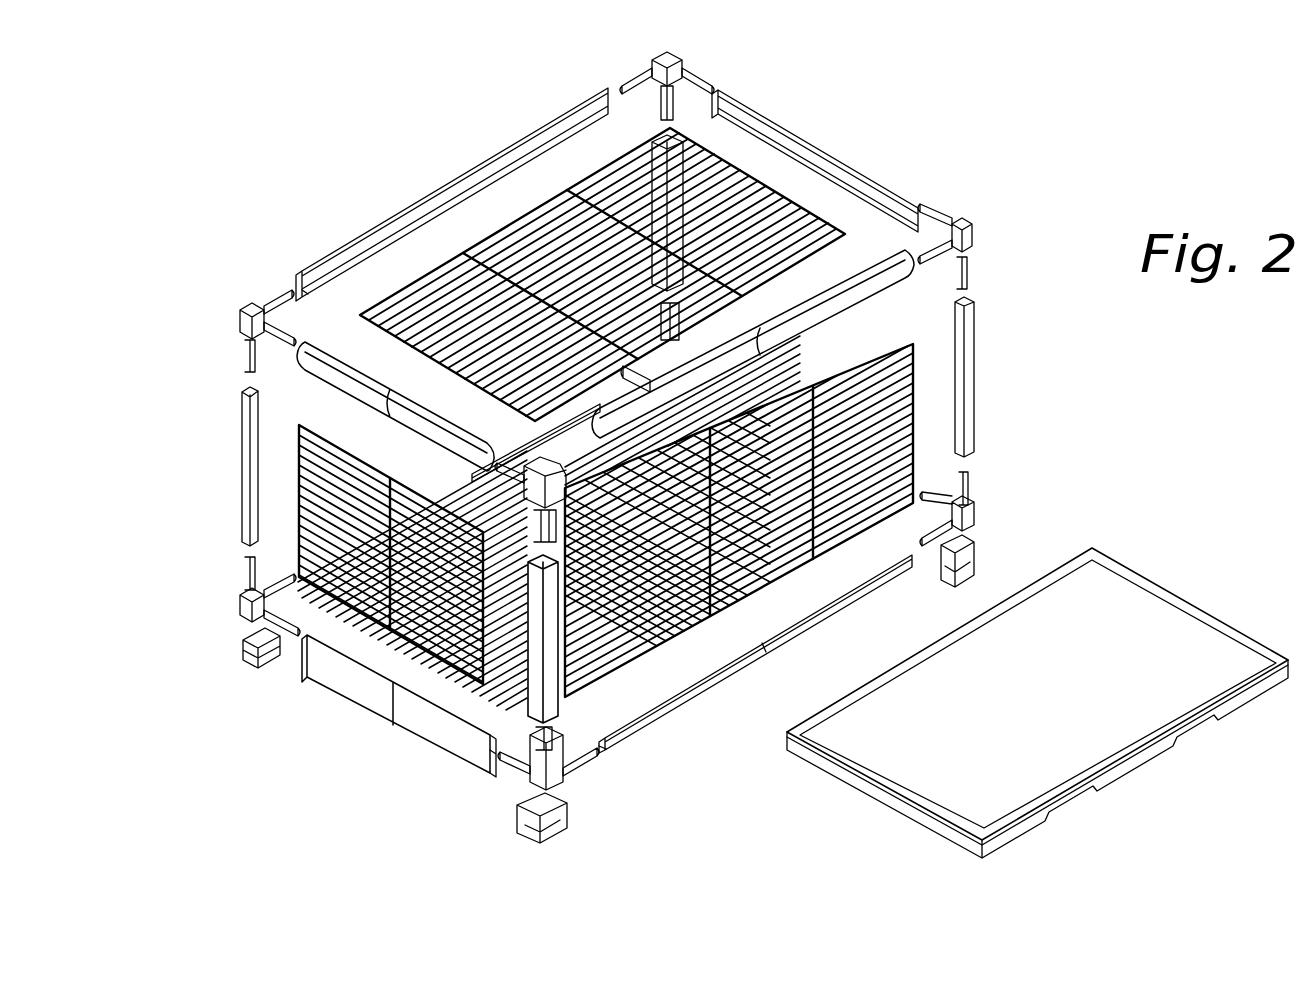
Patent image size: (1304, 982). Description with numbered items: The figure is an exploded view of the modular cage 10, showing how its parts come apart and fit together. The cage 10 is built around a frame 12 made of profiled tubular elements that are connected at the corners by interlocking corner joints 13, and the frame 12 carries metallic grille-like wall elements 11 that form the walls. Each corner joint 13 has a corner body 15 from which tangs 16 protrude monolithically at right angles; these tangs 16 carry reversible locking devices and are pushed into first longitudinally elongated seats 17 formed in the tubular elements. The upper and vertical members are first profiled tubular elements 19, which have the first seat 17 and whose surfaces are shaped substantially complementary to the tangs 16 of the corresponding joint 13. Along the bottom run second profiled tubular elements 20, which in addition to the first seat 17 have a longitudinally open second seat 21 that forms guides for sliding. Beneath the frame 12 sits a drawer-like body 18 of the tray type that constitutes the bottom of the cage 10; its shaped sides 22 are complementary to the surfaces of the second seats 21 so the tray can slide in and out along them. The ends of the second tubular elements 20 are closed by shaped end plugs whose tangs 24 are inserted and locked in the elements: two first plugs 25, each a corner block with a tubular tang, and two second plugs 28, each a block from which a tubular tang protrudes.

The modular cage 10 is at (979, 130).
The grille-like wall elements 11 is at (805, 213).
The frame 12 is at (977, 337).
The corner joints 13 is at (684, 62).
The corner body 15 is at (655, 62).
The tangs 16 is at (625, 80).
The first longitudinally elongated seats 17 is at (302, 273).
The drawer-like body 18 is at (1157, 572).
The first profiled tubular elements 19 is at (513, 153).
The second profiled tubular elements 20 is at (600, 696).
The second seat 21 is at (473, 757).
The shaped sides 22 is at (1200, 613).
The tangs 24 is at (277, 670).
The first plugs 25 is at (625, 397).
The second plugs 28 is at (974, 557).